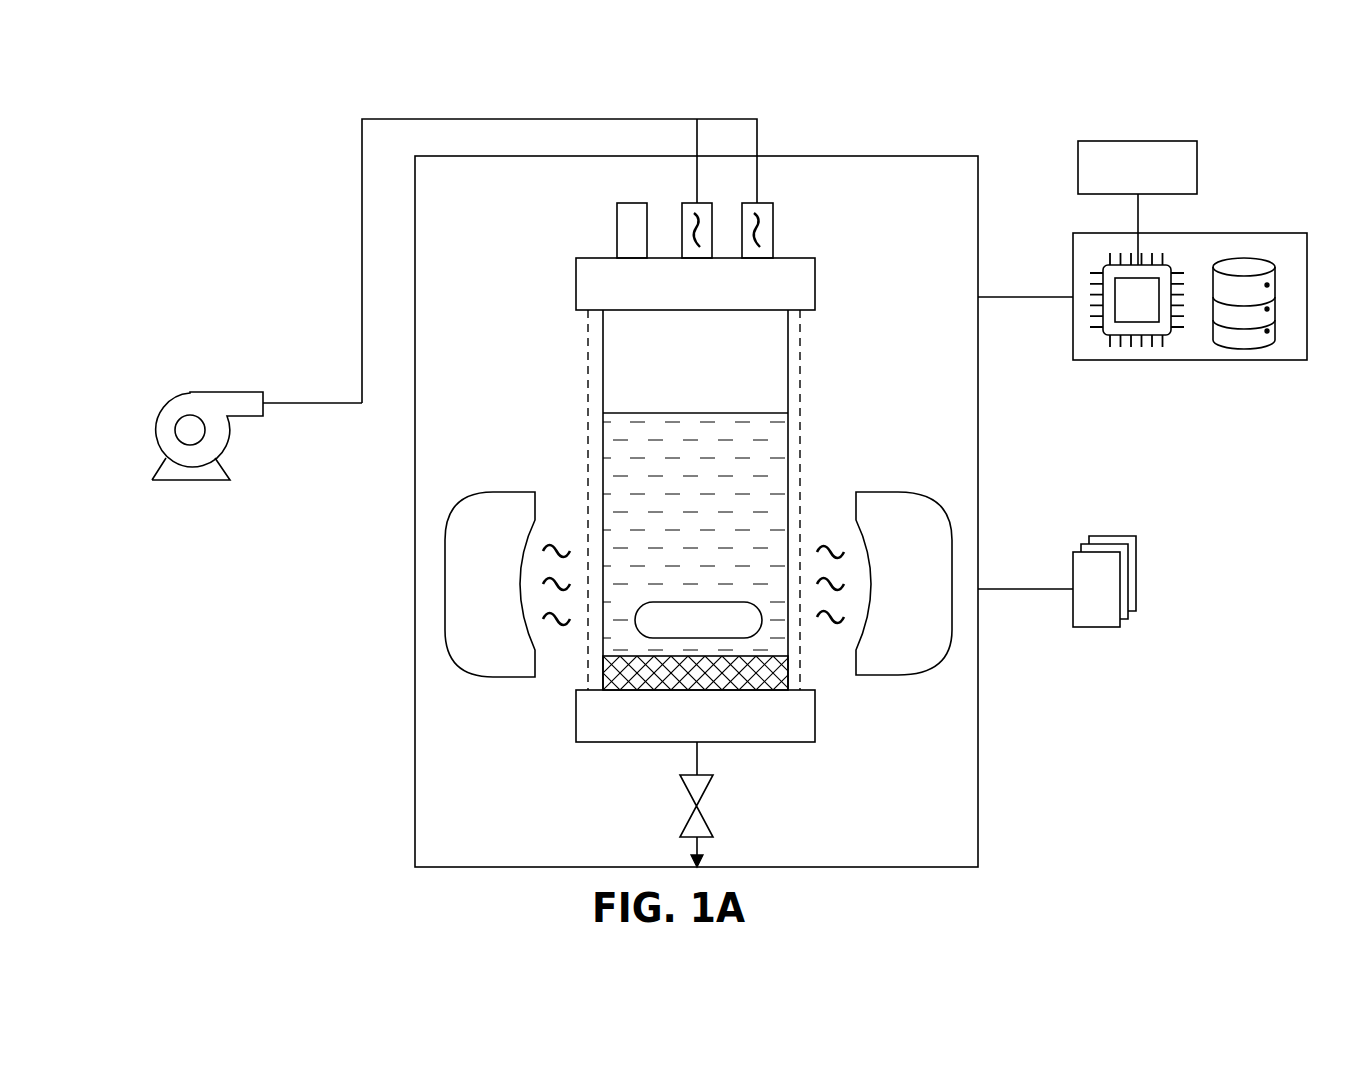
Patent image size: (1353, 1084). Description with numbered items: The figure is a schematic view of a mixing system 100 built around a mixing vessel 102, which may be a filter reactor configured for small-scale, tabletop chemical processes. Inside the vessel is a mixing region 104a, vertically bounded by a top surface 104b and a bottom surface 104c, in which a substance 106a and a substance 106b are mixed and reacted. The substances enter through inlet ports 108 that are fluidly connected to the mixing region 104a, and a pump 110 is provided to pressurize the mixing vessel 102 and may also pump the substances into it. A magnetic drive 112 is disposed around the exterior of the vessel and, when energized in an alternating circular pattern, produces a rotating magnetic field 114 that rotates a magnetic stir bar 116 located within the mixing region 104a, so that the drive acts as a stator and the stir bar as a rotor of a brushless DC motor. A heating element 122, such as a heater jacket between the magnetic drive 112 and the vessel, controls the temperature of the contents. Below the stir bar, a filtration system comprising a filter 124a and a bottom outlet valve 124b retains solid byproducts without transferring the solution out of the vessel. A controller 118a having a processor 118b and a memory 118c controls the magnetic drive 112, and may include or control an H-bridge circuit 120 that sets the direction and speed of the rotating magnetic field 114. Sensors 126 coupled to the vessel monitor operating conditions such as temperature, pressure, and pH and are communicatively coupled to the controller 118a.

The mixing system 100 is at (338, 97).
The mixing vessel 102 is at (788, 368).
The mixing region 104a is at (630, 470).
The top surface 104b is at (777, 312).
The bottom surface 104c is at (790, 657).
The substance 106a is at (696, 213).
The substance 106b is at (759, 218).
The inlet ports 108 is at (775, 227).
The pump 110 is at (155, 426).
The magnetic drive 112 is at (518, 492).
The rotating magnetic field 114 is at (562, 628).
The magnetic stir bar 116 is at (661, 621).
The controller 118a is at (1268, 233).
The processor 118b is at (1140, 348).
The memory 118c is at (1245, 345).
The H-bridge circuit 120 is at (1166, 141).
The heating element 122 is at (800, 405).
The filter 124a is at (763, 672).
The bottom outlet valve 124b is at (700, 822).
The sensors 126 is at (1138, 588).